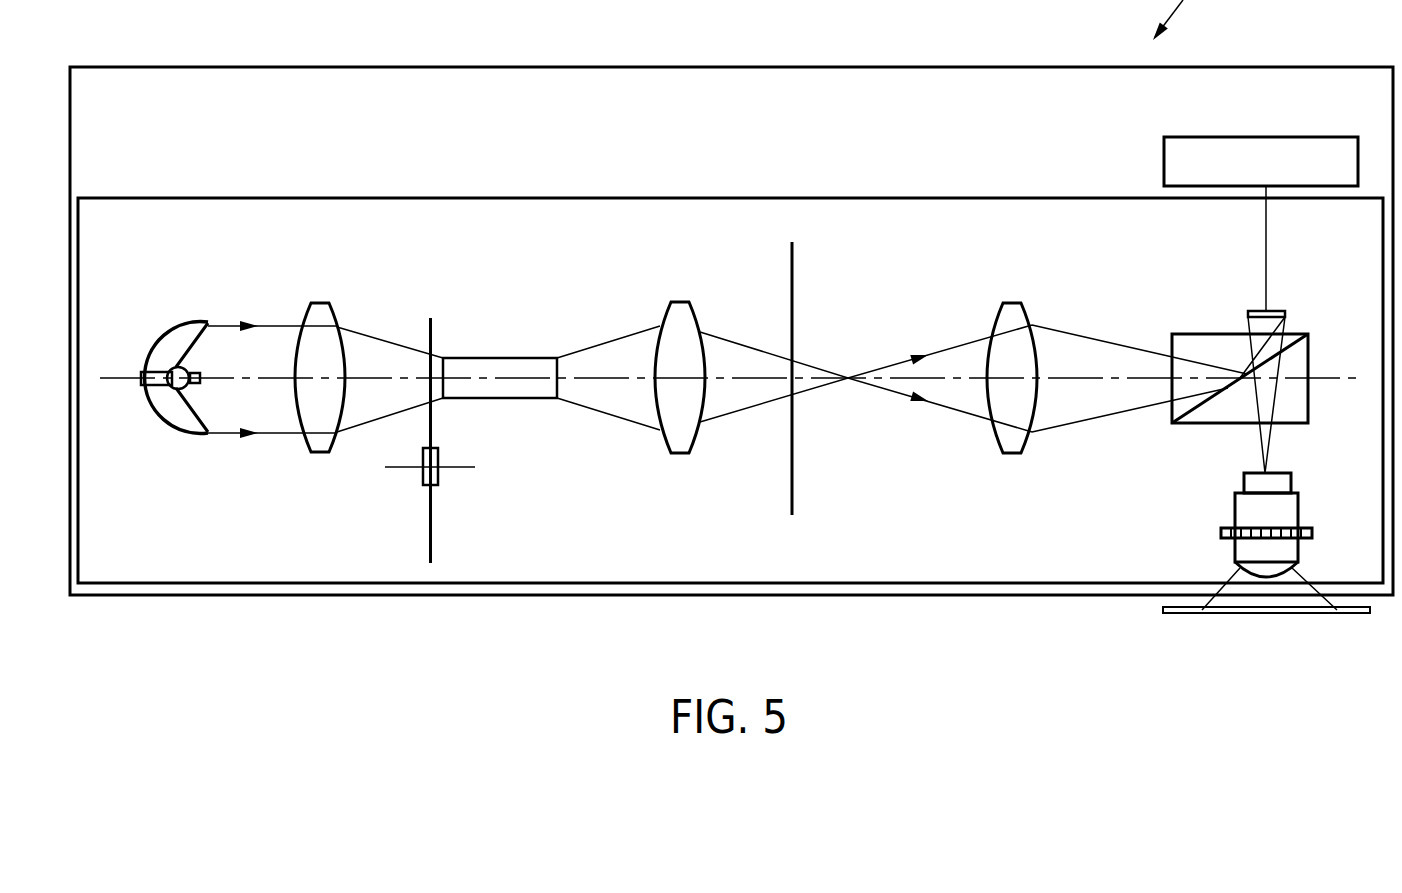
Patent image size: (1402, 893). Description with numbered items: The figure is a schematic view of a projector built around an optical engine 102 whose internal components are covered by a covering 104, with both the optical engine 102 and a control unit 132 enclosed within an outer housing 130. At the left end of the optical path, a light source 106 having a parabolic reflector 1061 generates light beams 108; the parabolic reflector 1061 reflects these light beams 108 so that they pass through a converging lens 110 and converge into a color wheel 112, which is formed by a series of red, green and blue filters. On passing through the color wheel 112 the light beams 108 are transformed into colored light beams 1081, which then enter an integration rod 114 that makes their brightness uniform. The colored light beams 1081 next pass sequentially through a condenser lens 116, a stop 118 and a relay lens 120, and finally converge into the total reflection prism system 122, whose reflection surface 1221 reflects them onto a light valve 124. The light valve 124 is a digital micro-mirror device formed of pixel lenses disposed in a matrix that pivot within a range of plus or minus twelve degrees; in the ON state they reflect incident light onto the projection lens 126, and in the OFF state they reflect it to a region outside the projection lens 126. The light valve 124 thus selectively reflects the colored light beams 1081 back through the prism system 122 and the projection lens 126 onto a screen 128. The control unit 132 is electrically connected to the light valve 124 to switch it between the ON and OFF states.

The optical engine 102 is at (560, 170).
The covering 104 is at (920, 197).
The light source 106 is at (170, 370).
The parabolic reflector 1061 is at (155, 417).
The light beams 108 is at (225, 323).
The colored light beams 1081 is at (433, 398).
The converging lens 110 is at (308, 317).
The color wheel 112 is at (423, 327).
The integration rod 114 is at (500, 358).
The condenser lens 116 is at (678, 302).
The stop 118 is at (795, 270).
The relay lens 120 is at (1012, 302).
The total reflection prism system 122 is at (1297, 400).
The reflection surface 1221 is at (1297, 347).
The light valve 124 is at (1260, 310).
The projection lens 126 is at (1245, 515).
The screen 128 is at (1183, 613).
The housing 130 is at (1245, 65).
The control unit 132 is at (1260, 135).